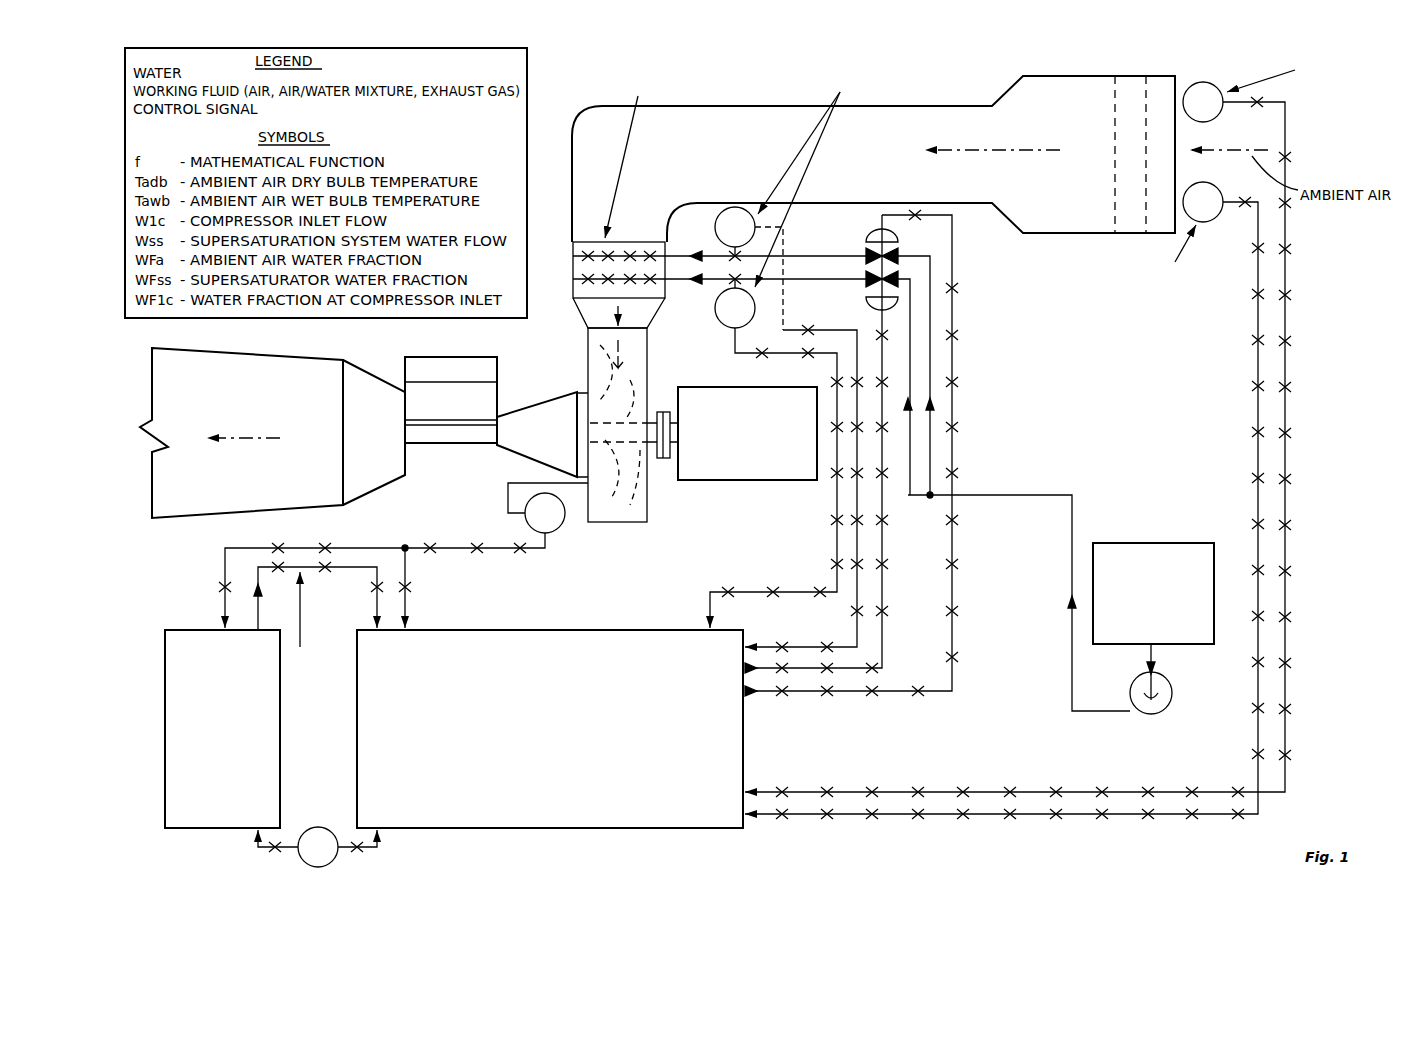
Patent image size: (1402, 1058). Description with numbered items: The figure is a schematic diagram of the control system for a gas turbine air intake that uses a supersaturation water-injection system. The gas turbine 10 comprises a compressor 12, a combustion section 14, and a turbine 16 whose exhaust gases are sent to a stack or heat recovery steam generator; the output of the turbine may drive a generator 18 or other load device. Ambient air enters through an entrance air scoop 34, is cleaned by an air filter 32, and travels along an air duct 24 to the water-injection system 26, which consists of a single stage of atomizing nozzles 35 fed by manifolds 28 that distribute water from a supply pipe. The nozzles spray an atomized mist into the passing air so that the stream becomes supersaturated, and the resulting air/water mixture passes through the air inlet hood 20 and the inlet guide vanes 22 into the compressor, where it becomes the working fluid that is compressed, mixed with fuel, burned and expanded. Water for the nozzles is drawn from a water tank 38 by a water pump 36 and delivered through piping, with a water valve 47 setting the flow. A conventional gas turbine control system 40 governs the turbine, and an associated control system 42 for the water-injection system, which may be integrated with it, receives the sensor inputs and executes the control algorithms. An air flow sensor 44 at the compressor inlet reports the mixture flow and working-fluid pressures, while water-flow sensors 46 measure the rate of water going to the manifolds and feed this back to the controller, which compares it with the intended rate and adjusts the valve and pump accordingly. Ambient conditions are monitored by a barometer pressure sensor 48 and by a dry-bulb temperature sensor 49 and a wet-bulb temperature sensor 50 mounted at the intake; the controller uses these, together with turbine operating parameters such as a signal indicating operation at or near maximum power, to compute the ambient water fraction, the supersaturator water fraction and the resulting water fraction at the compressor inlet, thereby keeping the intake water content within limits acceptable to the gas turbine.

The gas turbine 10 is at (455, 472).
The compressor 12 is at (546, 441).
The combustion section 14 is at (455, 412).
The turbine 16 is at (379, 442).
The generator 18 is at (759, 472).
The air inlet hood 20 is at (647, 509).
The inlet guide vanes (IGVs) 22 is at (588, 392).
The air duct 24 is at (739, 161).
The water-injection system 26 is at (573, 263).
The manifolds 28 is at (660, 304).
The air filter 32 is at (1128, 226).
The entrance air scoop 34 is at (1160, 90).
The water-injection system nozzles 35 is at (643, 248).
The water pump 36 is at (1172, 697).
The water tank 38 is at (1160, 633).
The gas turbine control system 40 is at (232, 782).
The water-injection control system 42 is at (554, 772).
The air flow sensor (FT) 44 is at (565, 524).
The water-flow sensors (FT) 46 is at (727, 327).
The water valve 47 is at (899, 277).
The barometer pressure sensor (PT) 48 is at (337, 861).
The dry-bulb temperature sensor 49 is at (1195, 83).
The wet-bulb temperature sensor 50 is at (1215, 218).